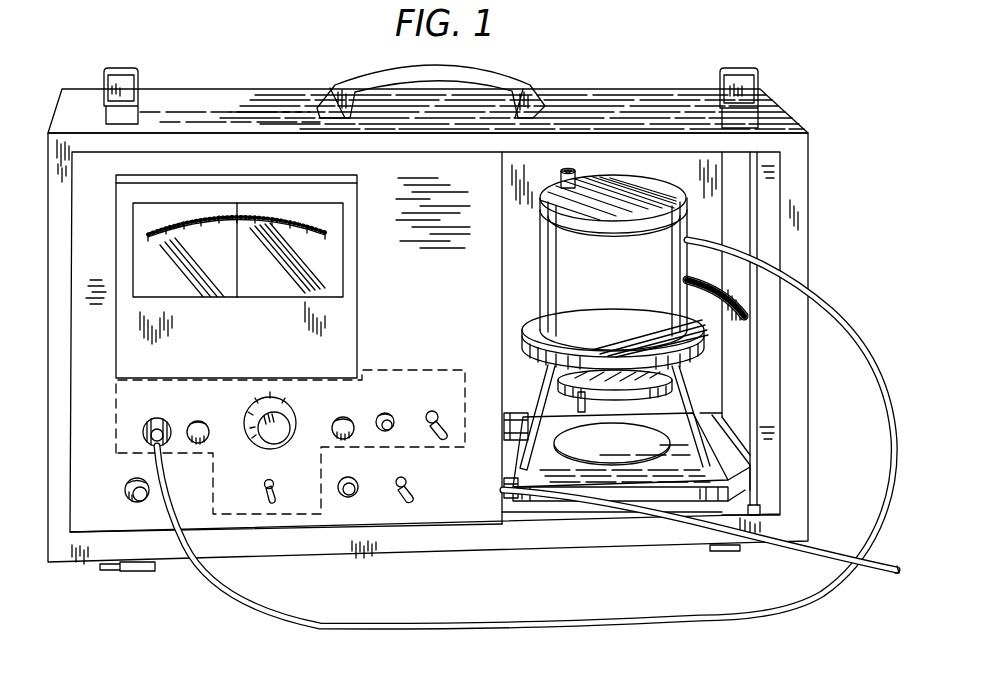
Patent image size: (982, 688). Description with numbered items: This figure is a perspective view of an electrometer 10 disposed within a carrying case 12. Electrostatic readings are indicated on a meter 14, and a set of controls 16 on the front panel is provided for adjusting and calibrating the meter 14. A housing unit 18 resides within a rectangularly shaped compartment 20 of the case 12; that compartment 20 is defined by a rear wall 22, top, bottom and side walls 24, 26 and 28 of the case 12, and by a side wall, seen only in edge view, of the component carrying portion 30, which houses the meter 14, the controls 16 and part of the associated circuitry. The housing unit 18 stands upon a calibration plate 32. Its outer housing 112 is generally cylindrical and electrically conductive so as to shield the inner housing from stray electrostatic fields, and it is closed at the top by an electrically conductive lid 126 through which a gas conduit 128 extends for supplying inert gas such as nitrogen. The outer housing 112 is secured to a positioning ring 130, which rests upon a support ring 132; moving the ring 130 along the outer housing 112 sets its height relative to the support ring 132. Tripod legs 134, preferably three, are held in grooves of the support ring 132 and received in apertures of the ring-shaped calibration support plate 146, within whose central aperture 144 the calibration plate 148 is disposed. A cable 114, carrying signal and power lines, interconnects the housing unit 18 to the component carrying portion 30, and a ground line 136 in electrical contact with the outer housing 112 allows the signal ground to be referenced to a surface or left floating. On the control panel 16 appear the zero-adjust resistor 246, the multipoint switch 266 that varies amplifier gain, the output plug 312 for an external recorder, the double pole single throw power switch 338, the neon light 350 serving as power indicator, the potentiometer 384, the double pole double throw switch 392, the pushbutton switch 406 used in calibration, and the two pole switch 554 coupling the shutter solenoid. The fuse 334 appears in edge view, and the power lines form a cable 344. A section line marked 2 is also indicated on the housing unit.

The electrometer 10 is at (222, 80).
The carrying case 12 is at (246, 94).
The meter 14 is at (360, 300).
The controls 16 is at (426, 370).
The housing unit 18 is at (695, 201).
The compartment 20 is at (748, 236).
The rear wall 22 is at (544, 191).
The top wall 24 is at (472, 112).
The bottom wall 26 is at (741, 483).
The side wall 28 is at (747, 396).
The component carrying portion 30 is at (508, 156).
The calibration plate 32 is at (708, 497).
The outer housing 112 is at (608, 303).
The cable 114 is at (675, 624).
The lid 126 is at (647, 208).
The gas conduit 128 is at (580, 98).
The positioning ring 130 is at (700, 318).
The support ring 132 is at (694, 362).
The tripod legs 134 is at (576, 404).
The ground line 136 is at (716, 277).
The aperture 144 is at (668, 434).
The calibration support plate 146 is at (615, 423).
The calibration plate 148 is at (612, 444).
The resistor 246 is at (199, 420).
The multipoint switch 266 is at (290, 412).
The output plug 312 is at (124, 492).
The fuse 334 is at (504, 410).
The double pole single throw switch 338 is at (410, 486).
The cable 344 is at (592, 502).
The neon light 350 is at (359, 491).
The potentiometer 384 is at (353, 418).
The double pole double throw switch 392 is at (434, 410).
The pushbutton switch 406 is at (400, 430).
The two pole switch 554 is at (248, 494).
The section line 2 is at (613, 160).